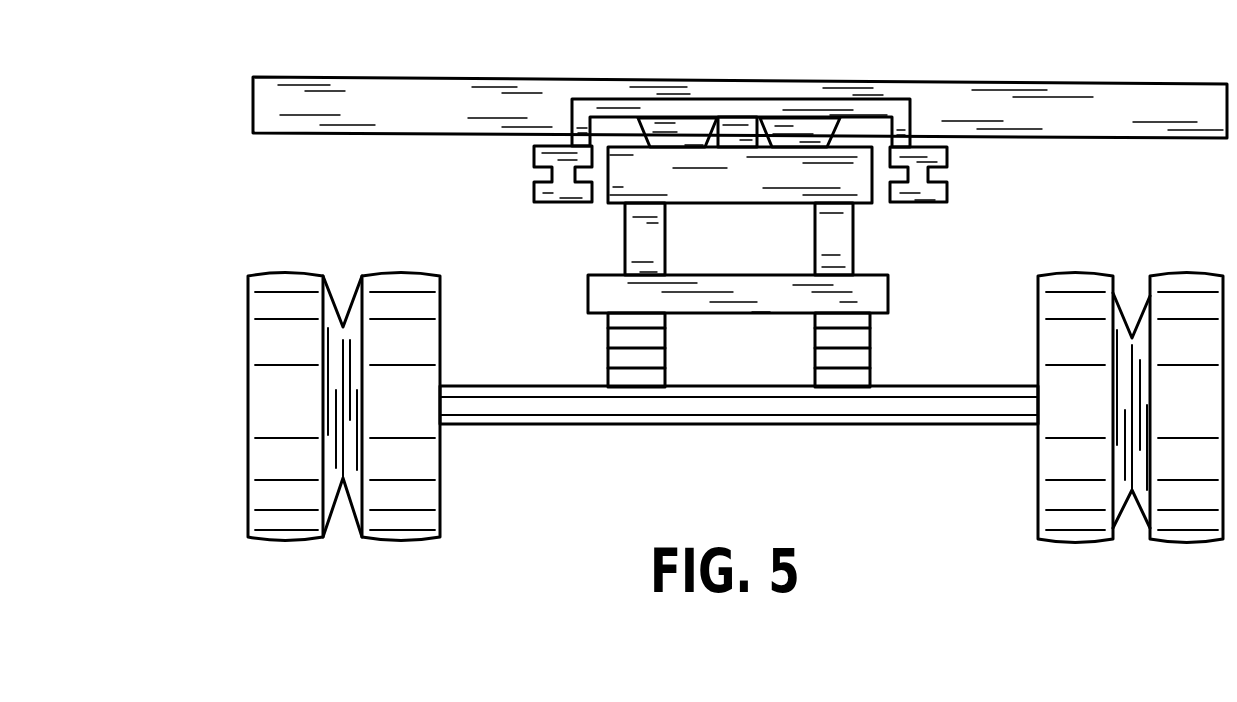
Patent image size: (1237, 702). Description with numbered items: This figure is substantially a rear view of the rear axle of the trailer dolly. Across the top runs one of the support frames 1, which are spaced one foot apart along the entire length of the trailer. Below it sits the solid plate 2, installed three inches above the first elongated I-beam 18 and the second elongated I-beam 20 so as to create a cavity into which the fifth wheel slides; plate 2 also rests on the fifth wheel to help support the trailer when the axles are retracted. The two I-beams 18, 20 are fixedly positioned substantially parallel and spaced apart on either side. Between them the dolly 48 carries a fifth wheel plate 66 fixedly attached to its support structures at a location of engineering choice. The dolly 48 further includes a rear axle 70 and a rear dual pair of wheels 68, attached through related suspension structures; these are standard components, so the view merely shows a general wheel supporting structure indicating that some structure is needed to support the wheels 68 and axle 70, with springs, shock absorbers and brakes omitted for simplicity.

The support frame 1 is at (1126, 103).
The plate 2 is at (854, 110).
The fifth wheel plate 66 is at (735, 121).
The second elongated I-beam 20 is at (553, 198).
The first elongated I-beam 18 is at (929, 201).
The dolly 48 is at (726, 194).
The rear axle 70 is at (740, 412).
The rear dual pair of wheels 68 is at (392, 533).